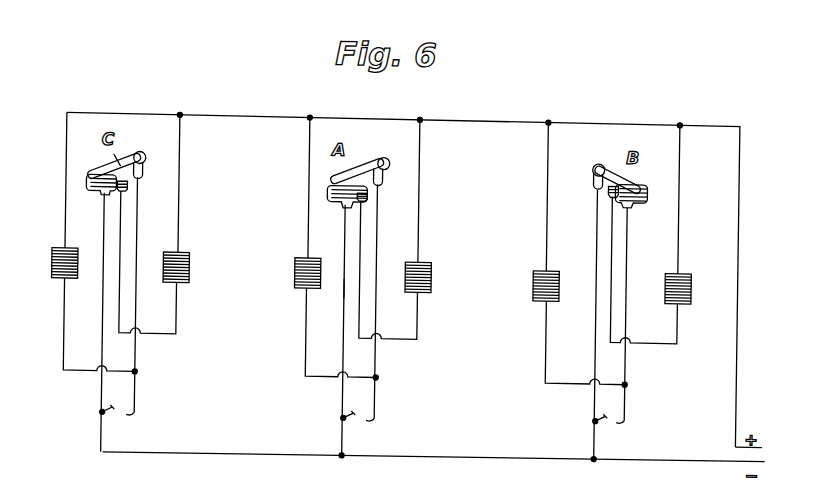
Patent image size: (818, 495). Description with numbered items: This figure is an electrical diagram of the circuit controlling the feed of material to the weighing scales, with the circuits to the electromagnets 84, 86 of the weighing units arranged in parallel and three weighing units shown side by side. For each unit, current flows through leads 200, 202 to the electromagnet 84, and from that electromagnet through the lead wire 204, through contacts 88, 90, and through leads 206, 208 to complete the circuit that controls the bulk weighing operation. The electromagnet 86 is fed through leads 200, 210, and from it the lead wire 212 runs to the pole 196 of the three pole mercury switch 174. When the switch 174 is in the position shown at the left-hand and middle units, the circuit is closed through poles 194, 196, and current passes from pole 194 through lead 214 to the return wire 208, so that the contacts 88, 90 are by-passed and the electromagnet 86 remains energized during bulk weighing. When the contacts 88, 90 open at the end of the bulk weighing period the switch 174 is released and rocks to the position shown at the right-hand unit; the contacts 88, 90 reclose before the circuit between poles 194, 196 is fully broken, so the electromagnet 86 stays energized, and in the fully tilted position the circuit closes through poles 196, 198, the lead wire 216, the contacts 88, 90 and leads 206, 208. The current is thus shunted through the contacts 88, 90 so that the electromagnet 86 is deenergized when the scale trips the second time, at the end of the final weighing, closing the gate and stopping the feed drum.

The lead 200 is at (738, 165).
The lead 202 is at (64, 148).
The lead wire 204 is at (64, 348).
The lead 206 is at (103, 445).
The return wire 208 is at (477, 456).
The lead 210 is at (178, 228).
The lead wire 212 is at (167, 339).
The lead 214 is at (344, 296).
The lead wire 216 is at (140, 191).
The three pole mercury switch 174 is at (139, 157).
The pole 194 is at (102, 200).
The pole 196 is at (126, 192).
The pole 198 is at (143, 183).
The electromagnet 84 is at (52, 287).
The electromagnet 86 is at (189, 272).
The contact 88 is at (112, 413).
The contact 90 is at (131, 420).